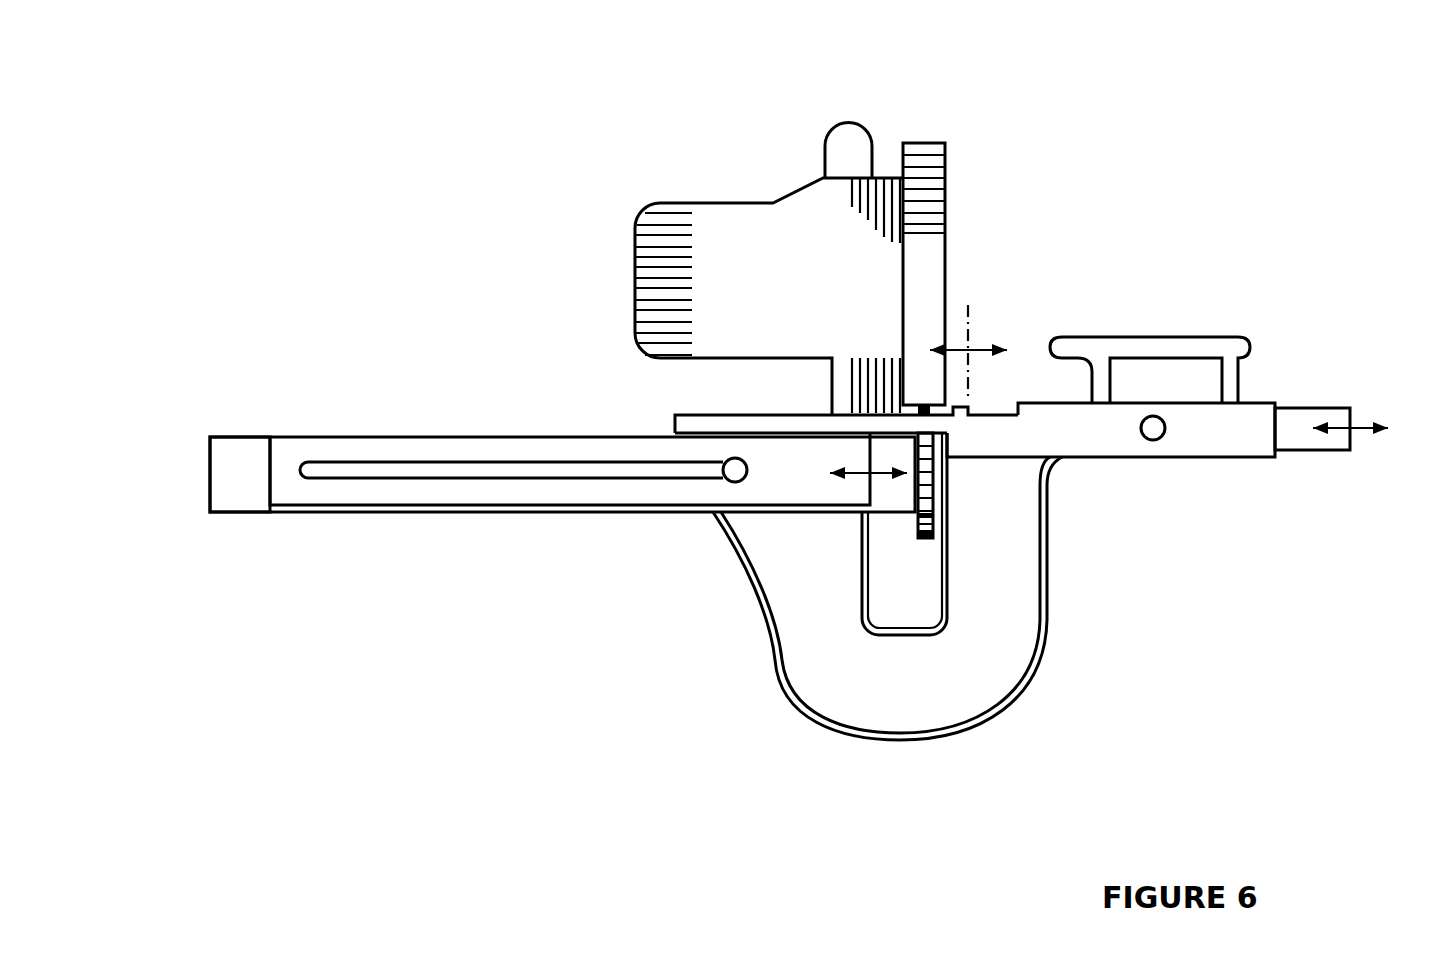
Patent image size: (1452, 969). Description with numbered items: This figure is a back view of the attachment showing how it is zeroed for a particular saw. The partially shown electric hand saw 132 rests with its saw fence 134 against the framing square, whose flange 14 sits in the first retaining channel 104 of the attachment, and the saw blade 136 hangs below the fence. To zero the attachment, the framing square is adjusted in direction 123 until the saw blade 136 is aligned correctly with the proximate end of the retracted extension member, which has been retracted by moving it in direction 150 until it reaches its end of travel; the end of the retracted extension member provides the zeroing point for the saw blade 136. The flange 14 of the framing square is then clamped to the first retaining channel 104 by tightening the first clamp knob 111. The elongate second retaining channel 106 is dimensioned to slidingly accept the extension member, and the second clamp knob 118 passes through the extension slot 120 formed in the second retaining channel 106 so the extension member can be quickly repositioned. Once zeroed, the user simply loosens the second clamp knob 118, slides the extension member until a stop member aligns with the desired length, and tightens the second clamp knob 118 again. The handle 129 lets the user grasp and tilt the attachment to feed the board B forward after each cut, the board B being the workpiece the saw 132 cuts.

The electric hand saw 132 is at (918, 105).
The saw fence 134 is at (813, 428).
The first retaining channel 104 is at (1257, 458).
The first clamp knob 111 is at (1153, 440).
The flange 14 is at (1300, 398).
The handle 129 is at (1092, 337).
The direction of adjustment 123 is at (970, 330).
The second retaining channel 106 is at (382, 497).
The board B is at (243, 513).
The extension slot 120 is at (497, 463).
The second clamp knob 118 is at (735, 482).
The retraction direction 150 is at (880, 478).
The saw blade 136 is at (925, 540).